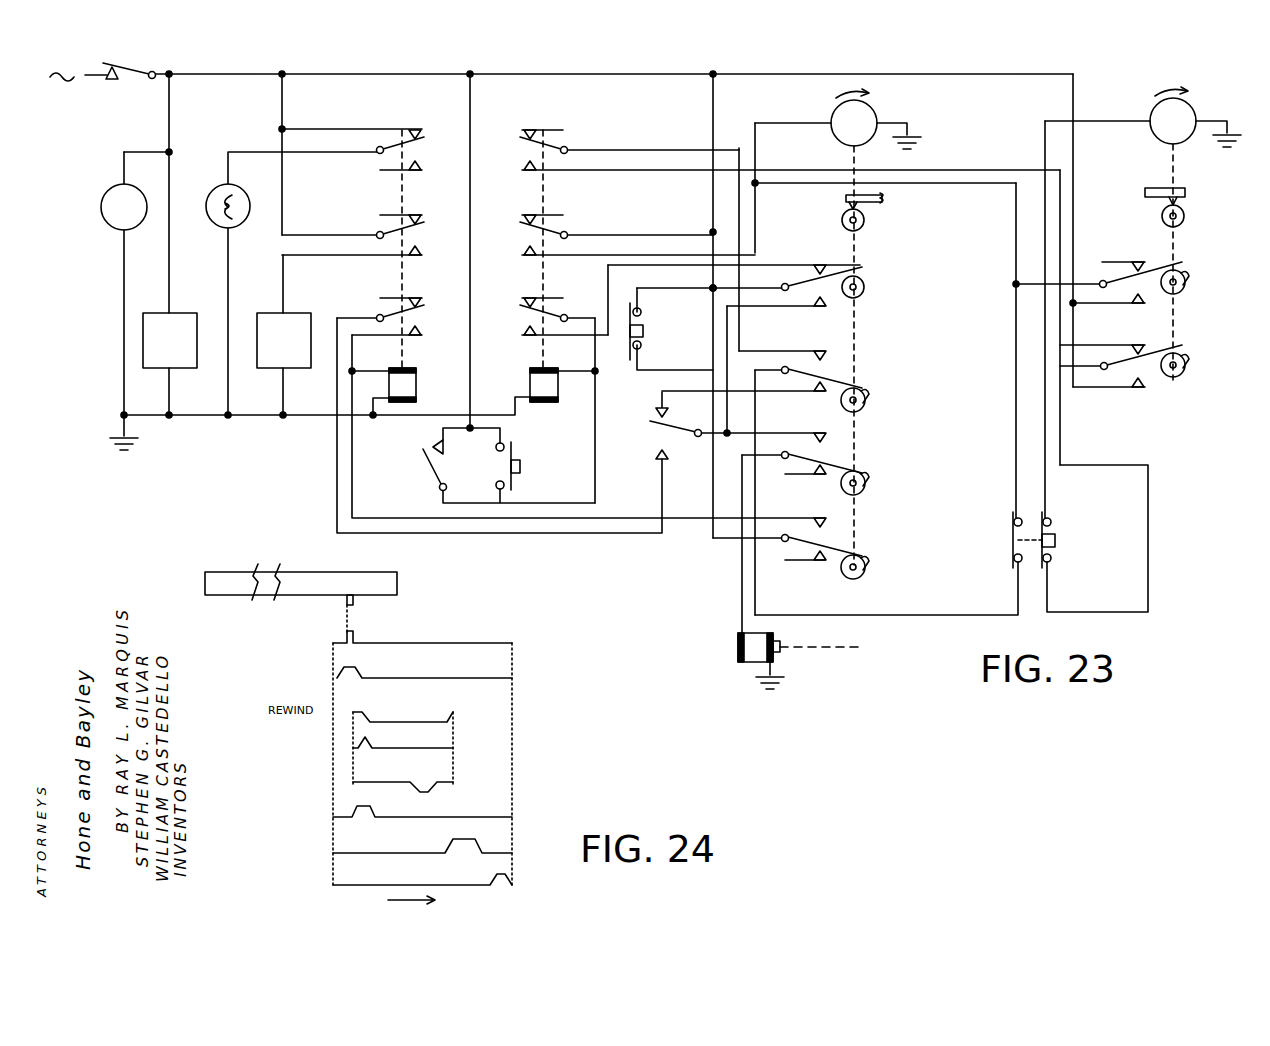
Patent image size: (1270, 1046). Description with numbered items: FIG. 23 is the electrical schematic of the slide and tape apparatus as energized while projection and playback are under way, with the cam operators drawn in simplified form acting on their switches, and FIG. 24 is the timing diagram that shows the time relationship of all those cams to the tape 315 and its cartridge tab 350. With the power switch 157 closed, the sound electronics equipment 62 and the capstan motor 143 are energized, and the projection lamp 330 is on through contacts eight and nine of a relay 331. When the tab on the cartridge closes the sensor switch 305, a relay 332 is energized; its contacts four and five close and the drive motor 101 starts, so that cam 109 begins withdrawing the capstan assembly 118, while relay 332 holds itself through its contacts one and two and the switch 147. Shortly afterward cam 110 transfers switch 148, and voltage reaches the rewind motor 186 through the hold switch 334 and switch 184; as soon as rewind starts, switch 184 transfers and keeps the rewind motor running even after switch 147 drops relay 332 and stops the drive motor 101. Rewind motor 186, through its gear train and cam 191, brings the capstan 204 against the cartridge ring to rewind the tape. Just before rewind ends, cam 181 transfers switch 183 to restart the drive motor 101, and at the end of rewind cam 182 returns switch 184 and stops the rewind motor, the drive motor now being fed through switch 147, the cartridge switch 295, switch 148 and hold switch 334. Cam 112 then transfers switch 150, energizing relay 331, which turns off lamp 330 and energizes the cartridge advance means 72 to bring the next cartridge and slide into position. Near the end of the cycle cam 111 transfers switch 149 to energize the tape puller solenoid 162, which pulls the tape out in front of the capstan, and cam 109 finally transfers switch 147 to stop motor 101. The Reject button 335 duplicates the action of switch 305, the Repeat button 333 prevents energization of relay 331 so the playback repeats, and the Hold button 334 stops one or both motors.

In FIG. 23, the power switch 157 is at (130, 62).
In FIG. 23, the capstan motor 143 is at (114, 204).
In FIG. 23, the projection lamp 330 is at (218, 196).
In FIG. 23, the sound electronics equipment 62 is at (176, 318).
In FIG. 23, the cartridge advance means 72 is at (270, 316).
In FIG. 23, the relay 331 is at (412, 384).
In FIG. 23, the relay 332 is at (531, 374).
In FIG. 23, the Repeat button 333 is at (641, 340).
In FIG. 23, the Reject button 335 is at (515, 457).
In FIG. 23, the sensor switch 305 is at (433, 477).
In FIG. 24, the sensor switch 305 is at (360, 637).
In FIG. 23, the cartridge switch 295 is at (656, 452).
In FIG. 23, the drive motor 101 is at (862, 113).
In FIG. 23, the capstan assembly 118 is at (884, 198).
In FIG. 23, the cam 109 is at (889, 286).
In FIG. 24, the cam 109 is at (515, 676).
In FIG. 23, the switch 147 is at (833, 300).
In FIG. 23, the switch 148 is at (826, 368).
In FIG. 23, the cam 110 is at (866, 403).
In FIG. 24, the cam 110 is at (515, 815).
In FIG. 23, the switch 149 is at (826, 450).
In FIG. 23, the cam 111 is at (866, 492).
In FIG. 24, the cam 111 is at (515, 880).
In FIG. 23, the switch 150 is at (826, 533).
In FIG. 23, the cam 112 is at (866, 573).
In FIG. 24, the cam 112 is at (515, 850).
In FIG. 23, the tape puller solenoid 162 is at (746, 656).
In FIG. 23, the hold switch 334 is at (1055, 527).
In FIG. 23, the rewind motor 186 is at (1182, 110).
In FIG. 23, the cam 191 is at (1182, 210).
In FIG. 24, the cam 191 is at (455, 713).
In FIG. 23, the capstan 204 is at (1157, 197).
In FIG. 23, the cam 181 is at (1186, 290).
In FIG. 24, the cam 181 is at (455, 780).
In FIG. 23, the switch 183 is at (1150, 300).
In FIG. 23, the cam 182 is at (1186, 372).
In FIG. 24, the cam 182 is at (455, 746).
In FIG. 23, the switch 184 is at (1148, 375).
In FIG. 24, the tape 315 is at (390, 590).
In FIG. 24, the cartridge tab 350 is at (356, 602).